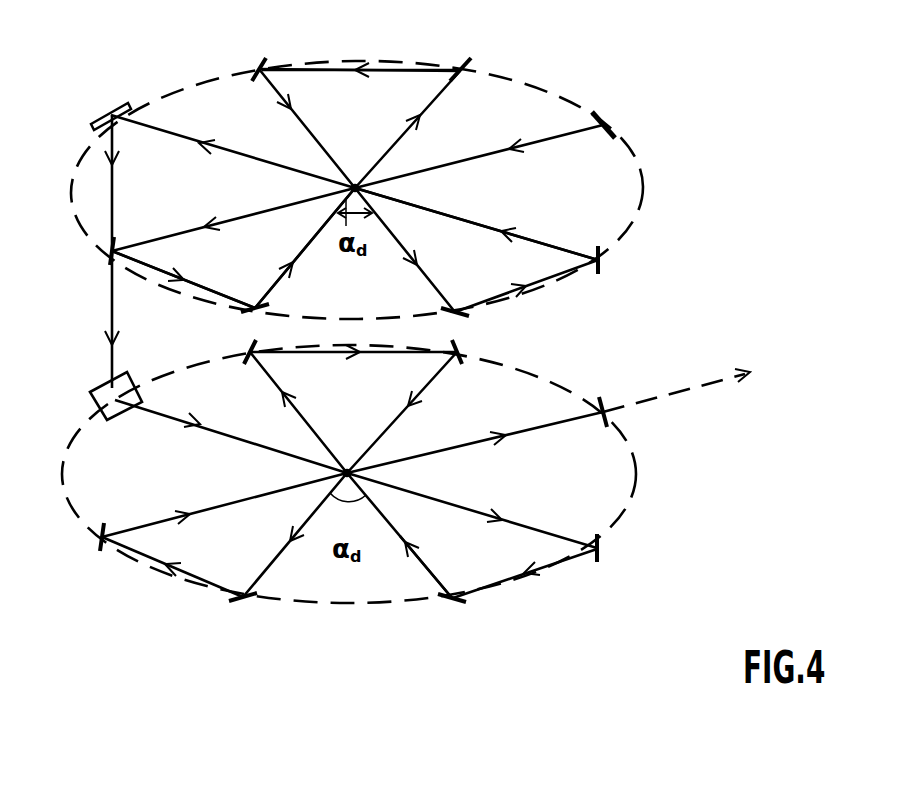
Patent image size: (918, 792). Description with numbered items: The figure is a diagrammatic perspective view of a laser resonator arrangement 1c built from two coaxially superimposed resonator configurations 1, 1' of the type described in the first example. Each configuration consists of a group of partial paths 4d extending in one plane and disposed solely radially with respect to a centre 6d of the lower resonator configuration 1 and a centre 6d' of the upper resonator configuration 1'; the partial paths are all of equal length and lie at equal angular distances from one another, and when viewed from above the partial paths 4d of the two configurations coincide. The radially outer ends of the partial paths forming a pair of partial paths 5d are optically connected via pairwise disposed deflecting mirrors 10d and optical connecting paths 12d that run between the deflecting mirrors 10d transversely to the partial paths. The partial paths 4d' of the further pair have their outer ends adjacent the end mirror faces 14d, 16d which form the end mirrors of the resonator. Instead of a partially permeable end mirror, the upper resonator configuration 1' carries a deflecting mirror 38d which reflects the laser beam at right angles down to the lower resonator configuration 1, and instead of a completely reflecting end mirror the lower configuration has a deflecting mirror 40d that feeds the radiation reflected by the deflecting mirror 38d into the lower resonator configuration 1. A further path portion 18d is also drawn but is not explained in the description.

The lower resonator configuration 1 is at (349, 508).
The upper resonator configuration 1' is at (402, 190).
The resonator arrangement 1c is at (658, 298).
The partial paths 4d is at (484, 423).
The partial paths of the further pair 4d' is at (491, 252).
The pair of partial paths 5d is at (240, 290).
The centre 6d is at (352, 424).
The centre 6d' is at (372, 141).
The deflecting mirrors 10d is at (462, 68).
The optical connecting paths 12d is at (385, 68).
The end mirror face 14d is at (613, 413).
The end mirror face 16d is at (607, 118).
The beam path 18d is at (506, 218).
The deflecting mirror 38d is at (112, 112).
The deflecting mirror 40d is at (92, 392).